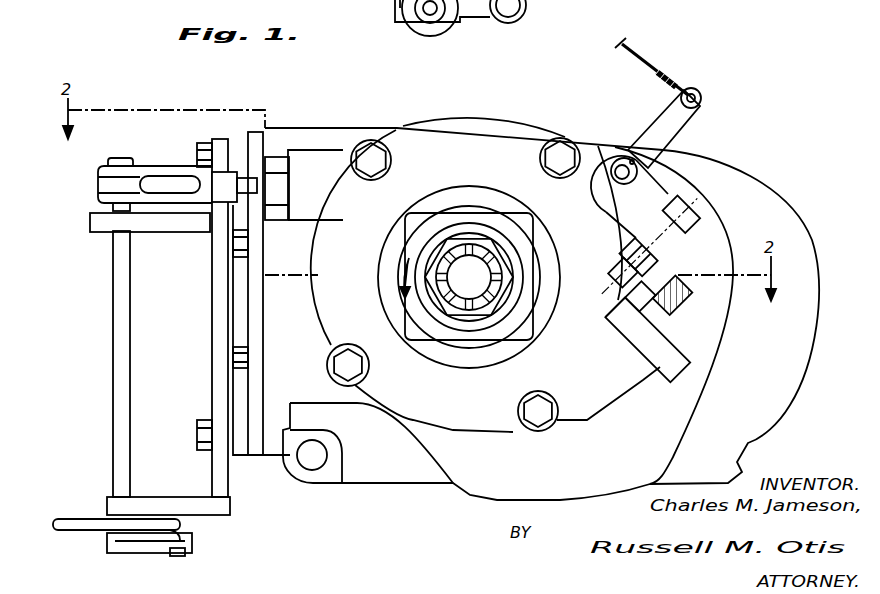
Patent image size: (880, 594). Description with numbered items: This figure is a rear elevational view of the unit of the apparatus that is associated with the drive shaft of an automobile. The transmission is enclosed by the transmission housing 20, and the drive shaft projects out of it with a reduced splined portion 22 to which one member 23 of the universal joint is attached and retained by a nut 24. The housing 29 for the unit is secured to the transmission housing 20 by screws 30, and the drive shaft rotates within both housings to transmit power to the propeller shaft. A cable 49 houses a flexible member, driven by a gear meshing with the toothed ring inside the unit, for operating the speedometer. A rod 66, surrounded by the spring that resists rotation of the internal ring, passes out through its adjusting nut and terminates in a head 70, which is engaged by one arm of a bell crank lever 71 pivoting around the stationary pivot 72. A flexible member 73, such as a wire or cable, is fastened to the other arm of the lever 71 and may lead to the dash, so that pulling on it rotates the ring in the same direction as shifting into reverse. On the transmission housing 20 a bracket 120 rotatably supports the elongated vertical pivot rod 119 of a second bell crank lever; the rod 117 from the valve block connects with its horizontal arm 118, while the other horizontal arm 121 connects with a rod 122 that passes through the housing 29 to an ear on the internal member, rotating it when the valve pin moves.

The transmission housing 20 is at (380, 485).
The reduced splined portion 22 is at (470, 262).
The member of the universal joint 23 is at (528, 234).
The nut 24 is at (498, 287).
The housing for the unit 29 is at (514, 140).
The screws 30 is at (566, 143).
The cable 49 is at (678, 312).
The rod 66 is at (655, 250).
The head 70 is at (694, 218).
The bell crank lever 71 is at (673, 132).
The stationary pivot 72 is at (642, 173).
The flexible member 73 is at (645, 66).
The rod 117 is at (70, 520).
The horizontal arm 118 is at (160, 550).
The vertical pivot rod 119 is at (128, 274).
The bracket 120 is at (214, 308).
The horizontal arm 121 is at (105, 187).
The rod 122 is at (258, 188).